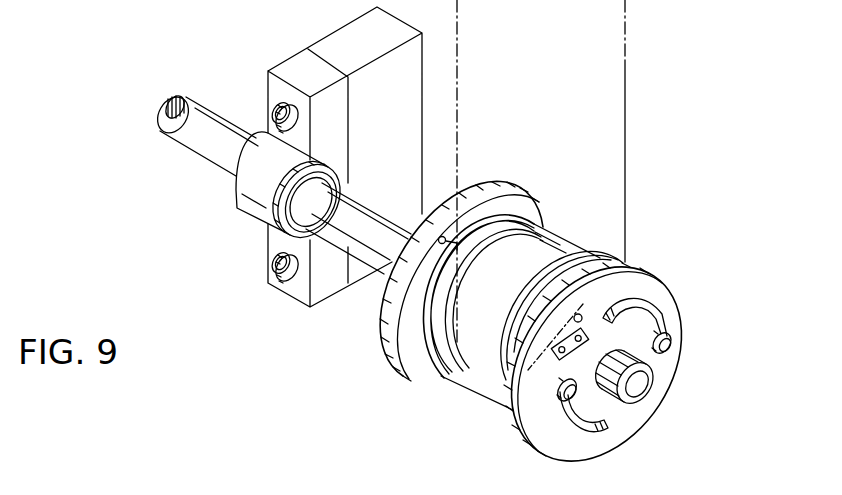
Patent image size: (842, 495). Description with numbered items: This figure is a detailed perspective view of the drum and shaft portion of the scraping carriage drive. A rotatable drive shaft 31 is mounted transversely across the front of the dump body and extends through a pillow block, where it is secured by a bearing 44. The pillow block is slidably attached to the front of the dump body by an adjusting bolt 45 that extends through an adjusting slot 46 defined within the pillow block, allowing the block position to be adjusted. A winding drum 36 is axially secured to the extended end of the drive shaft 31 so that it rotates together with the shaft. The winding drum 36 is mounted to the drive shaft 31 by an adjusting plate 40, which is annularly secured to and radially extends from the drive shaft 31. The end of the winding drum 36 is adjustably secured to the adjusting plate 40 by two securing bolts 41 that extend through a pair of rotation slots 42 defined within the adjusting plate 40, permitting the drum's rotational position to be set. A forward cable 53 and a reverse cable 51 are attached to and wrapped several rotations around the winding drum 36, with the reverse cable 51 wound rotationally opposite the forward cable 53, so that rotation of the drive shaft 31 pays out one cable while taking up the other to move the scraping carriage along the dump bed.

The drive shaft 31 is at (193, 137).
The winding drum 36 is at (480, 343).
The adjusting plate 40 is at (541, 325).
The securing bolt 41 is at (672, 356).
The rotation slot 42 is at (648, 315).
The bearing 44 is at (327, 163).
The adjusting bolt 45 is at (276, 117).
The adjusting slot 46 is at (276, 97).
The reverse cable 51 is at (625, 62).
The forward cable 53 is at (458, 83).